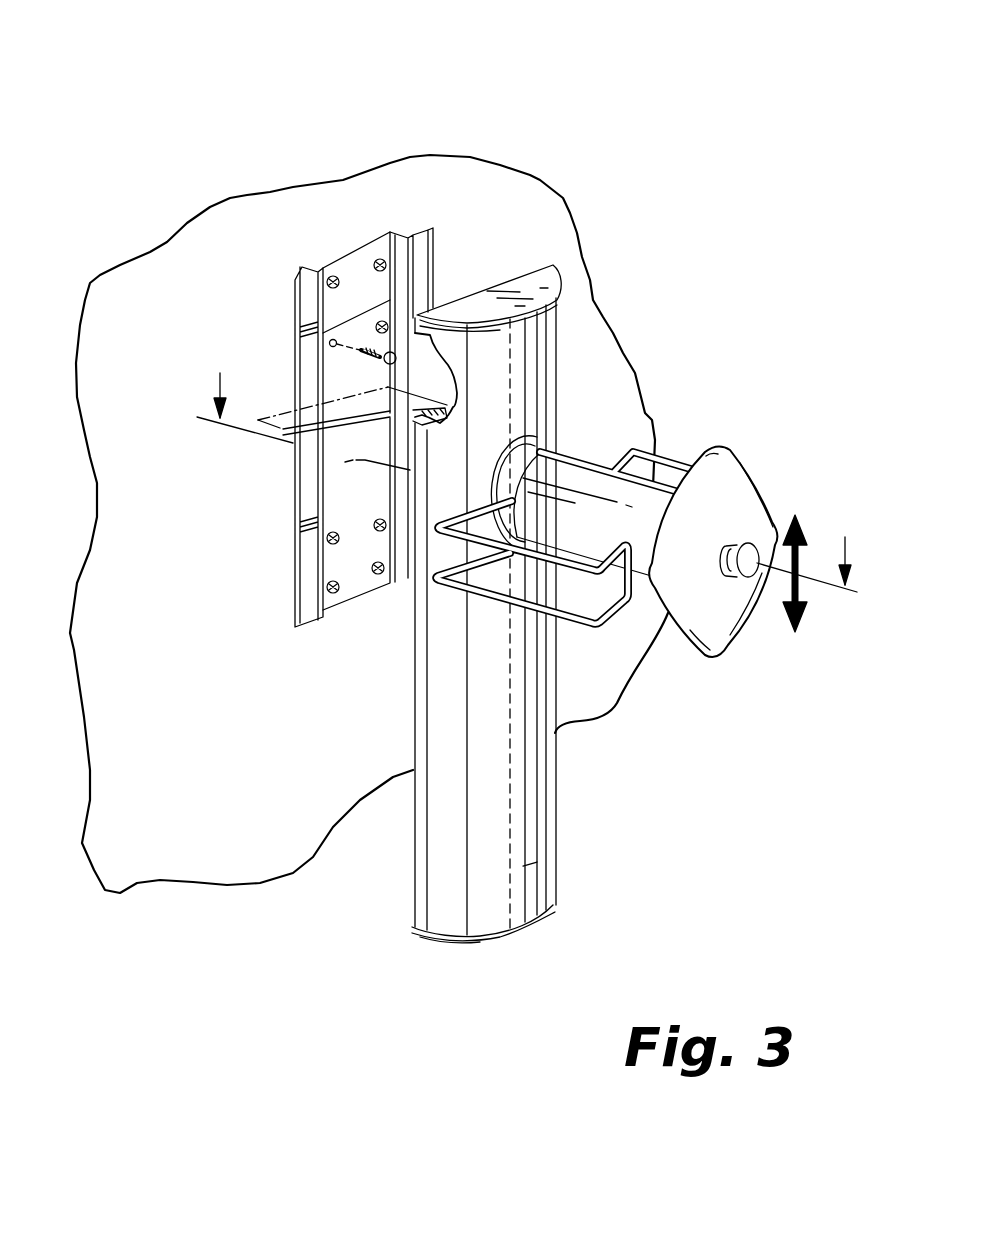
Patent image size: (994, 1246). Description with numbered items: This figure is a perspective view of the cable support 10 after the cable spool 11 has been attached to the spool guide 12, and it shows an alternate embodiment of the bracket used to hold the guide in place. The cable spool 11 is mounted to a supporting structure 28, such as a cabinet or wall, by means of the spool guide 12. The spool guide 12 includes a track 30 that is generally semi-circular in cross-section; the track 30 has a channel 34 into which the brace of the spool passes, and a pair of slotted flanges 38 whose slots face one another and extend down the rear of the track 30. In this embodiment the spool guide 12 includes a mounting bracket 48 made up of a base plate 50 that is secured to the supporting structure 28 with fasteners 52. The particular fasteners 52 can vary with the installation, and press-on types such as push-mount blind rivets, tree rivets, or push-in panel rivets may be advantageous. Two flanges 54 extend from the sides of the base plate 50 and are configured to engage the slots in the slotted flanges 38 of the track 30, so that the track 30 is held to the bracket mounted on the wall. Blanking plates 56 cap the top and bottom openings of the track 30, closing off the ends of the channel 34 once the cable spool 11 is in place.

The cable support 10 is at (736, 148).
The cable spool 11 is at (693, 392).
The spool guide 12 is at (590, 213).
The supporting structure 28 is at (190, 767).
The track 30 is at (572, 316).
The channel 34 is at (527, 410).
The slotted flanges 38 is at (440, 430).
The mounting bracket 48 is at (372, 448).
The base plate 50 is at (360, 585).
The fasteners 52 is at (364, 345).
The flanges 54 is at (427, 240).
The blanking plates 56 is at (463, 312).